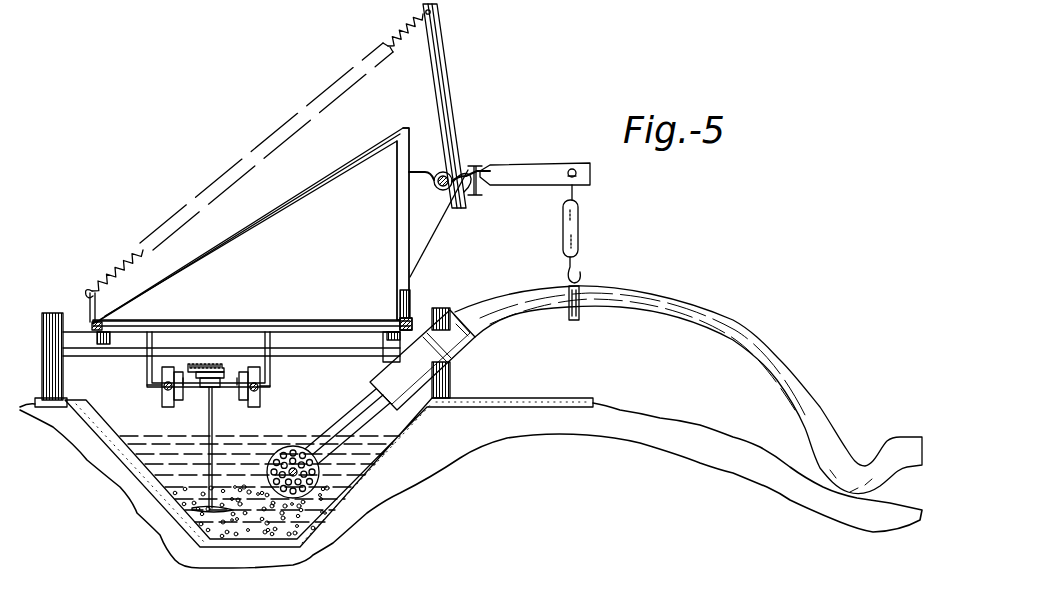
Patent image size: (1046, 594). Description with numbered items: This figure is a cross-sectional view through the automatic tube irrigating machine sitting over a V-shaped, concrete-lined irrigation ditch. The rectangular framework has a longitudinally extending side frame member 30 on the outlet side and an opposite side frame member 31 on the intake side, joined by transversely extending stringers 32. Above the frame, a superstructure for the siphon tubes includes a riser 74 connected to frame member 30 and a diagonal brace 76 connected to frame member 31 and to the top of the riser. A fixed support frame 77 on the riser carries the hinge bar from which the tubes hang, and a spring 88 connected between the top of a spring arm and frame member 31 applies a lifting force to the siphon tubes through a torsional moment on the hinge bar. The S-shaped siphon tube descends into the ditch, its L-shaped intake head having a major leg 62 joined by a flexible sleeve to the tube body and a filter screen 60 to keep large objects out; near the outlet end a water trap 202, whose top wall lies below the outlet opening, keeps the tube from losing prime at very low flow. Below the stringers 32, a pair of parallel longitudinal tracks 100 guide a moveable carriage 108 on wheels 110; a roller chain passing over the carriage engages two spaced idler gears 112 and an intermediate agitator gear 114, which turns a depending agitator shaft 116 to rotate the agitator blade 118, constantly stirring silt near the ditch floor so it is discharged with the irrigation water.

The side frame member 30 is at (417, 318).
The side frame member 31 is at (88, 323).
The stringer 32 is at (310, 322).
The filter screen 60 is at (405, 412).
The major leg 62 is at (358, 401).
The riser 74 is at (403, 219).
The diagonal brace 76 is at (327, 179).
The fixed support frame 77 is at (452, 221).
The spring 88 is at (406, 46).
The longitudinal track 100 is at (160, 391).
The moveable carriage 108 is at (193, 393).
The wheel 110 is at (170, 408).
The idler gear 112 is at (200, 362).
The agitator gear 114 is at (221, 362).
The agitator shaft 116 is at (207, 468).
The agitator blade 118 is at (203, 511).
The water trap 202 is at (857, 491).